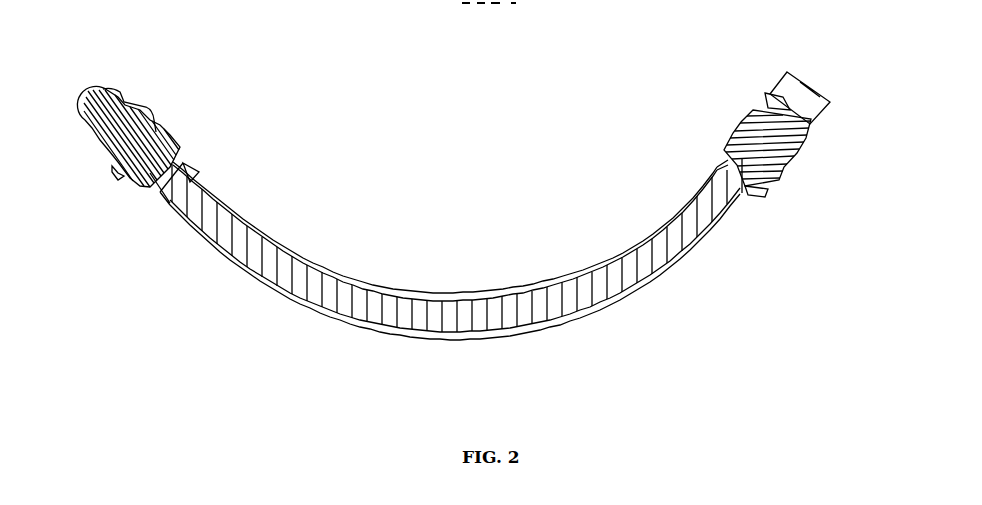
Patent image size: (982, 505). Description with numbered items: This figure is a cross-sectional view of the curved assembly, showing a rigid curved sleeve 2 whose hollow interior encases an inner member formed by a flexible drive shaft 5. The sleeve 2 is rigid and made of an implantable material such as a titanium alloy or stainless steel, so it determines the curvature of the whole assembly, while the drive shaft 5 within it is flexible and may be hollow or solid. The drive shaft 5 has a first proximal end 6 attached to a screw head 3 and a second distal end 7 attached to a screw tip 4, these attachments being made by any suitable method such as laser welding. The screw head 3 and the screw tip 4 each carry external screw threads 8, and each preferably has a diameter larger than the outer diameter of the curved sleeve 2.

The curved sleeve 2 is at (456, 286).
The screw head 3 is at (798, 72).
The screw tip 4 is at (129, 144).
The drive shaft 5 is at (437, 338).
The first proximal end 6 is at (735, 100).
The second distal end 7 is at (187, 167).
The external screw threads 8 is at (118, 173).